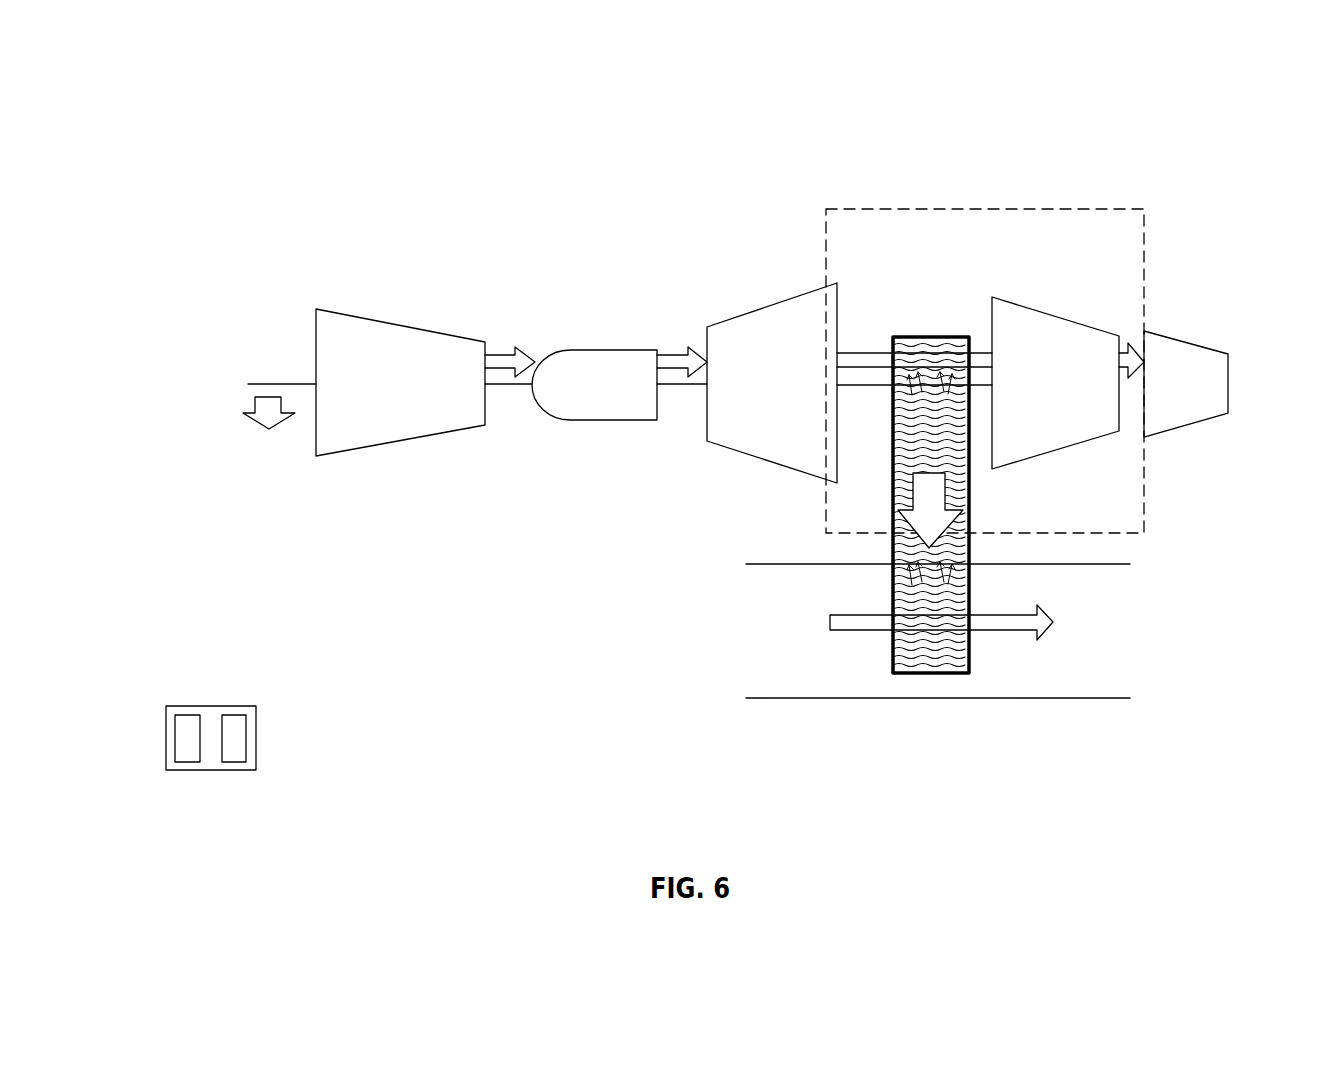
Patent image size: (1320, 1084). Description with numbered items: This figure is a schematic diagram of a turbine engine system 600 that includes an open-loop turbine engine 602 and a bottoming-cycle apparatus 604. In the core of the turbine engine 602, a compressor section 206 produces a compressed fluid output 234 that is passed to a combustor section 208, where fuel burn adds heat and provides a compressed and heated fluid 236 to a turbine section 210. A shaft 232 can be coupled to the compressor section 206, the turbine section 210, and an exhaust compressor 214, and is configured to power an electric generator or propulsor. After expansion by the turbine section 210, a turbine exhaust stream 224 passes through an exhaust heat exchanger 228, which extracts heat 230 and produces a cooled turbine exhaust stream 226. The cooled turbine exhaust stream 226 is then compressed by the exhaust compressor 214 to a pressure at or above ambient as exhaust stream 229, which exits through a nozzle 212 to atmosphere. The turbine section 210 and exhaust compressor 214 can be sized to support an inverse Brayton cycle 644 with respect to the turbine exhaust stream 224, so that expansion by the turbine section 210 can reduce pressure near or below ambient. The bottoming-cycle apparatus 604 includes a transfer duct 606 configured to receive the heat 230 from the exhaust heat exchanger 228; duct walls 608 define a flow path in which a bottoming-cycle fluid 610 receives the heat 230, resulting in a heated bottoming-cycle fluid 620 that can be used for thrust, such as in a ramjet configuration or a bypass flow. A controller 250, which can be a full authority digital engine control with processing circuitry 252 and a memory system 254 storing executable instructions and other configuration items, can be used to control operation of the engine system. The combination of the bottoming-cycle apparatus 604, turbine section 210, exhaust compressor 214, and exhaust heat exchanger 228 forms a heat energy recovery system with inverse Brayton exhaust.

The turbine engine system 600 is at (563, 131).
The turbine engine 602 is at (784, 207).
The inverse Brayton cycle 644 is at (1093, 209).
The compressor section 206 is at (400, 323).
The shaft 232 is at (283, 383).
The compressed fluid output 234 is at (500, 350).
The combustor section 208 is at (590, 350).
The compressed and heated fluid 236 is at (680, 352).
The turbine section 210 is at (770, 303).
The turbine exhaust stream 224 is at (858, 352).
The exhaust heat exchanger 228 is at (930, 337).
The heat 230 is at (970, 510).
The cooled turbine exhaust stream 226 is at (980, 353).
The exhaust compressor 214 is at (1040, 305).
The exhaust stream 229 is at (1123, 353).
The nozzle 212 is at (1180, 335).
The duct walls 608 is at (786, 563).
The transfer duct 606 is at (797, 643).
The bottoming-cycle fluid 610 is at (850, 622).
The heated bottoming-cycle fluid 620 is at (1020, 622).
The bottoming-cycle apparatus 604 is at (833, 742).
The controller 250 is at (210, 706).
The processing circuitry 252 is at (188, 762).
The memory system 254 is at (233, 762).